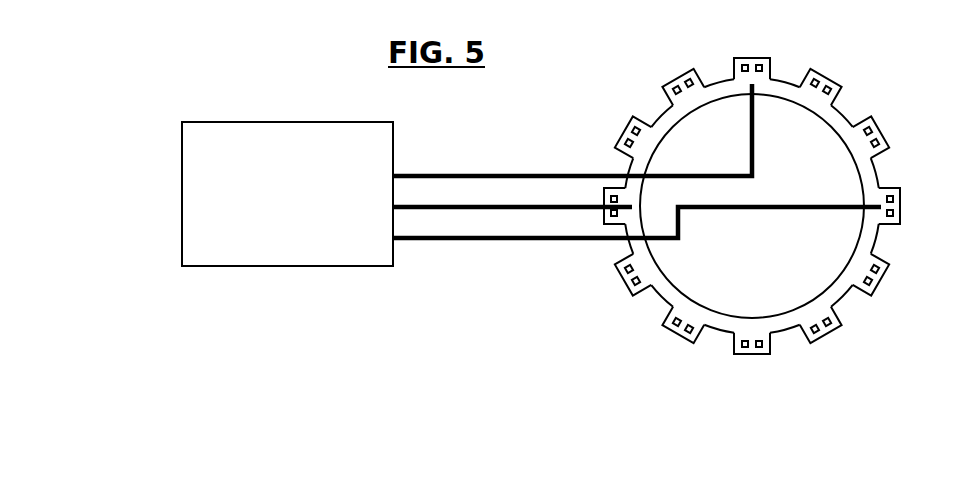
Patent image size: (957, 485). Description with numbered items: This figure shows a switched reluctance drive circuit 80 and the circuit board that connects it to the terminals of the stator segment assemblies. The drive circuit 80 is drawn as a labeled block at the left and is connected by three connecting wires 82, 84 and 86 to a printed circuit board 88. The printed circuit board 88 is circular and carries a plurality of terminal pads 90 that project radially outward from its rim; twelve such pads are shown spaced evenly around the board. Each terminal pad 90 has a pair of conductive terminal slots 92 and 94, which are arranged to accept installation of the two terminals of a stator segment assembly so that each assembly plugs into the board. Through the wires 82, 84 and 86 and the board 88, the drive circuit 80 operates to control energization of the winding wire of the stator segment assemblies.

The switched reluctance drive circuit 80 is at (149, 150).
The connecting wire 82 is at (523, 174).
The connecting wire 84 is at (480, 210).
The connecting wire 86 is at (537, 240).
The printed circuit board 88 is at (727, 87).
The terminal pad 90 is at (825, 73).
The conductive terminal slot 92 is at (745, 63).
The conductive terminal slot 94 is at (760, 63).